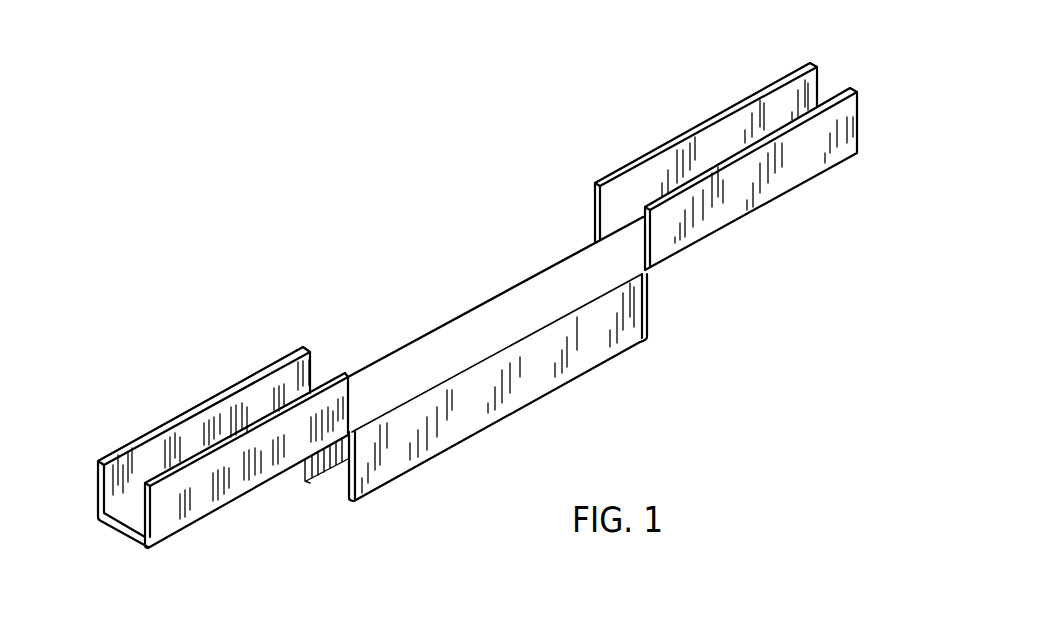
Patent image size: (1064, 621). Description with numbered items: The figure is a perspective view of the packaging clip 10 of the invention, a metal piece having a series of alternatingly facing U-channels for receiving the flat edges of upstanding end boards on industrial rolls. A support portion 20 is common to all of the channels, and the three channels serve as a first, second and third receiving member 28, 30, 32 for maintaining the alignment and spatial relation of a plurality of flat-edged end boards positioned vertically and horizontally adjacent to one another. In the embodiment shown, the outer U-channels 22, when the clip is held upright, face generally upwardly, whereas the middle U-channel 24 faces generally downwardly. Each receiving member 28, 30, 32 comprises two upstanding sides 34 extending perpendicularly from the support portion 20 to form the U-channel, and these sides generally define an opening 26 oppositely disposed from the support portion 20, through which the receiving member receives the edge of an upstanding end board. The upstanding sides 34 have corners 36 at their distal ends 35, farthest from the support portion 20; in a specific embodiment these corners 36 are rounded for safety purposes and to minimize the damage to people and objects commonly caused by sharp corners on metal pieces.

The packaging clip 10 is at (223, 192).
The support portion 20 is at (548, 387).
The outer U-channels 22 is at (485, 310).
The middle U-channel 24 is at (456, 295).
The opening 26 is at (827, 88).
The first receiving member 28 is at (175, 535).
The second receiving member 30 is at (365, 363).
The third receiving member 32 is at (813, 180).
The upstanding sides 34 is at (837, 127).
The distal ends 35 is at (733, 150).
The corners 36 is at (645, 340).